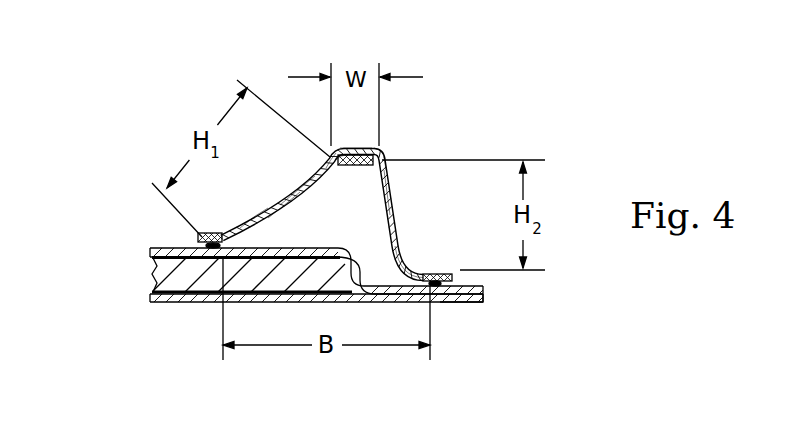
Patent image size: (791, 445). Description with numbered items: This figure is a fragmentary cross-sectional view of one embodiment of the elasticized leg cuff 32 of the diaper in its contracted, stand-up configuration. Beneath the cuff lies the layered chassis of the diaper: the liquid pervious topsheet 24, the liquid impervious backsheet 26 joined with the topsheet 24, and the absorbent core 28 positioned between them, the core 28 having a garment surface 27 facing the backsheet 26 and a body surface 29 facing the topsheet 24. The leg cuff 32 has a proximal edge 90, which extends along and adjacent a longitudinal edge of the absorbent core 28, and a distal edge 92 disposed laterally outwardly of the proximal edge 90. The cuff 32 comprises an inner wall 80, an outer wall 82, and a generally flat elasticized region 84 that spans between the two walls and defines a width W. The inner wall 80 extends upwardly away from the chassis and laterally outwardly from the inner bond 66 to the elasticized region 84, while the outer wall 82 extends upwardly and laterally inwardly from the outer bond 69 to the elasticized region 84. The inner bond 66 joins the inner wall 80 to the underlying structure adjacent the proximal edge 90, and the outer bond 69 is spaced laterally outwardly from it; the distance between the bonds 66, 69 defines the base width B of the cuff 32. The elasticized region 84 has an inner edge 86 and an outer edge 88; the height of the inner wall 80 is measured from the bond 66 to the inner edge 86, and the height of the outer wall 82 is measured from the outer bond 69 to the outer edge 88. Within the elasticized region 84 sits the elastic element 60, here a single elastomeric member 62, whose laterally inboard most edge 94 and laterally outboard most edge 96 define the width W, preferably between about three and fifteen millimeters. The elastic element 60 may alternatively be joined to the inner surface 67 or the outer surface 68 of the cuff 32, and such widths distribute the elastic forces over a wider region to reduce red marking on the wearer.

The topsheet 24 is at (480, 290).
The backsheet 26 is at (481, 302).
The garment surface 27 is at (192, 299).
The absorbent core 28 is at (160, 276).
The body surface 29 is at (150, 249).
The leg cuff 32 is at (403, 221).
The elastic element 60 is at (386, 185).
The elastomeric member 62 is at (341, 167).
The inner bond 66 is at (206, 246).
The inner surface 67 is at (283, 219).
The outer surface 68 is at (263, 214).
The outer bond 69 is at (440, 287).
The inner wall 80 is at (306, 183).
The outer wall 82 is at (400, 258).
The elasticized region 84 is at (357, 143).
The inner edge 86 is at (331, 156).
The outer edge 88 is at (382, 154).
The proximal edge 90 is at (202, 233).
The distal edge 92 is at (455, 277).
The laterally inboard most edge 94 is at (333, 160).
The laterally outboard most edge 96 is at (387, 160).